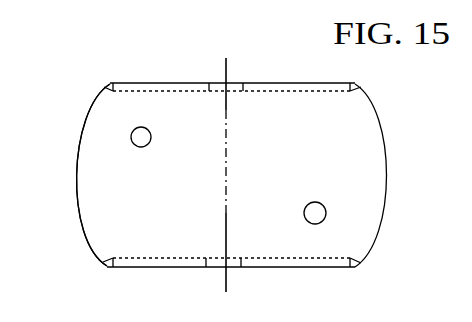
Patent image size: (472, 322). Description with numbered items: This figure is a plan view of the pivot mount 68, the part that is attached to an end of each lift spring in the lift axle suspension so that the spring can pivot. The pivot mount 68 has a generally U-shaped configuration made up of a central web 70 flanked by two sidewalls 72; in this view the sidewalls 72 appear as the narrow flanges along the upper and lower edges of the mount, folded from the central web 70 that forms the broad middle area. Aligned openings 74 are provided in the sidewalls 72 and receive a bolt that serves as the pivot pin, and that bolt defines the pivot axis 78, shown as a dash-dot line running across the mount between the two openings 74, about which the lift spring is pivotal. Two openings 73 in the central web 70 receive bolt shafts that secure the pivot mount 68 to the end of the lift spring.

The pivot mount 68 is at (388, 242).
The central web 70 is at (100, 190).
The sidewalls 72 is at (165, 83).
The openings 73 is at (141, 140).
The aligned openings 74 is at (238, 83).
The pivot axis 78 is at (227, 157).